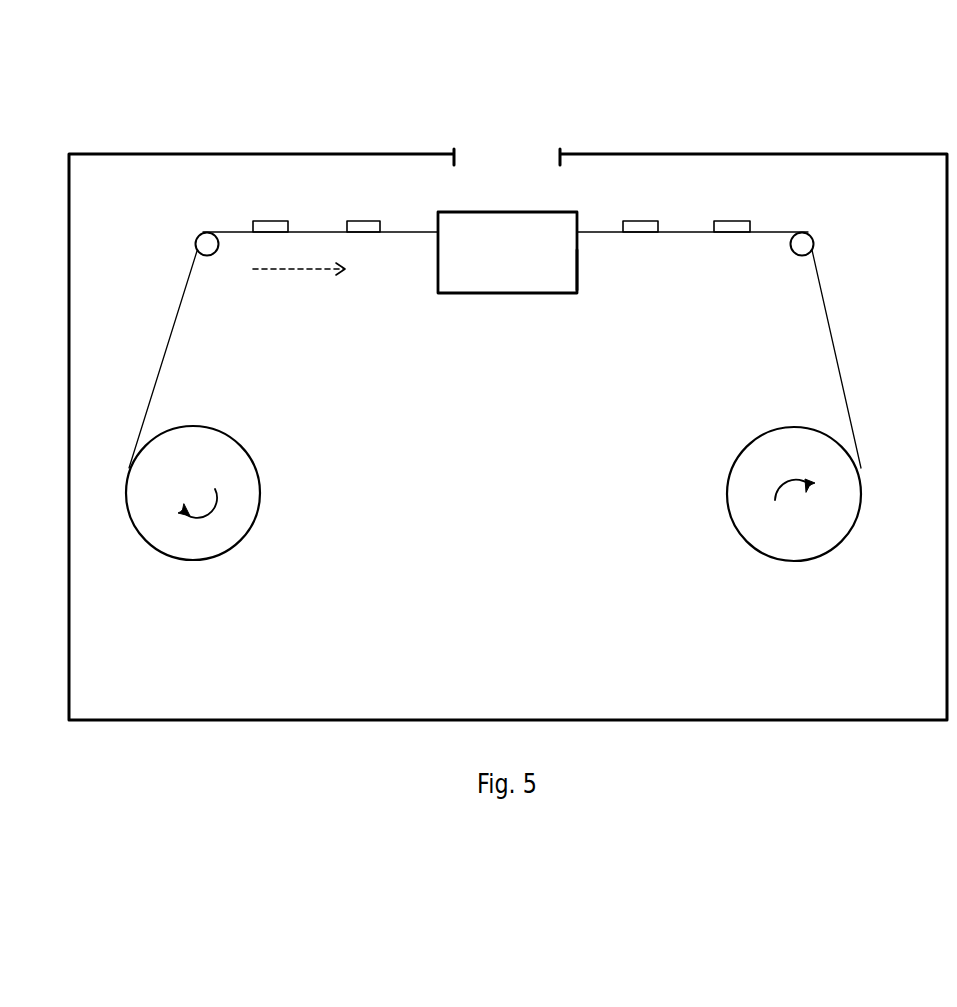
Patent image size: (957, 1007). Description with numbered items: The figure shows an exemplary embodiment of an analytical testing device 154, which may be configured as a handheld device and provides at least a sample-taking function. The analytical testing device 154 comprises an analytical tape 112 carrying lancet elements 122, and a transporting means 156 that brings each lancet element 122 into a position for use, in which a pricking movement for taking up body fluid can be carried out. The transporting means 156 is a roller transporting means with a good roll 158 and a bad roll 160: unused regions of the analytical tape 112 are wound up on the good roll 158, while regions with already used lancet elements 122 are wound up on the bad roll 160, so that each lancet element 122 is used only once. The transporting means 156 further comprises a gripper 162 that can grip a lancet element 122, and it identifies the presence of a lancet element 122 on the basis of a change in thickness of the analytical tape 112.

The analytical tape 112 is at (673, 232).
The lancet element 122 is at (268, 227).
The analytical testing device 154 is at (868, 147).
The transporting means 156 is at (508, 313).
The good roll 158 is at (180, 562).
The bad roll 160 is at (805, 563).
The gripper 162 is at (567, 270).